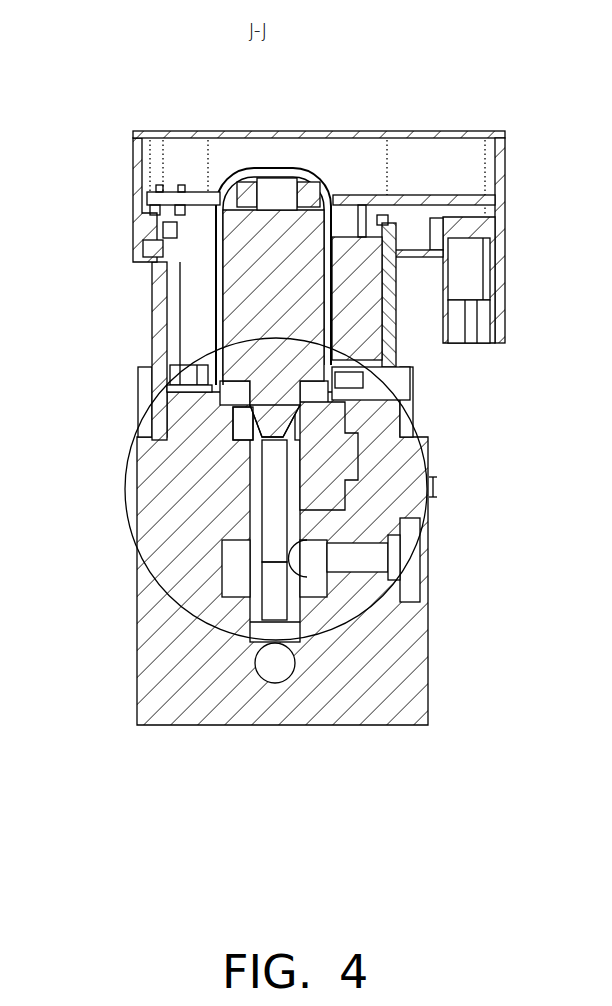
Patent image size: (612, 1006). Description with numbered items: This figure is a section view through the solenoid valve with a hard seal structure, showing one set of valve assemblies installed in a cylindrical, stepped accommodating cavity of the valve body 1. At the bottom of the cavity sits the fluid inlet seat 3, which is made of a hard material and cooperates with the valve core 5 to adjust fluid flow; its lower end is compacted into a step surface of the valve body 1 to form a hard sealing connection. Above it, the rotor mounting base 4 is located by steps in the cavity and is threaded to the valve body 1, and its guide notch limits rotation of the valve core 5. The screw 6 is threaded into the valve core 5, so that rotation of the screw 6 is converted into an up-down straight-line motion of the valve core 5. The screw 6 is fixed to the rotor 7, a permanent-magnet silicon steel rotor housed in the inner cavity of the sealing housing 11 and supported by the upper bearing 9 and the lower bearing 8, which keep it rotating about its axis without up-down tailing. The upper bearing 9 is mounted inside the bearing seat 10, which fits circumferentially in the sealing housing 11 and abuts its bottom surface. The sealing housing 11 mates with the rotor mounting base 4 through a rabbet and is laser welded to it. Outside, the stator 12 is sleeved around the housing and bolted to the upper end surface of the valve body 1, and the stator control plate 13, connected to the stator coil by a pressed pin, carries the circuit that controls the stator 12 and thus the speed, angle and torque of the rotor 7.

The valve body 1 is at (408, 703).
The fluid inlet seat 3 is at (315, 578).
The rotor mounting base 4 is at (335, 465).
The valve core 5 is at (268, 575).
The screw 6 is at (275, 505).
The rotor 7 is at (278, 432).
The lower bearing 8 is at (242, 425).
The upper bearing 9 is at (252, 227).
The bearing seat 10 is at (248, 190).
The sealing housing 11 is at (260, 175).
The stator 12 is at (360, 252).
The stator control plate 13 is at (467, 199).